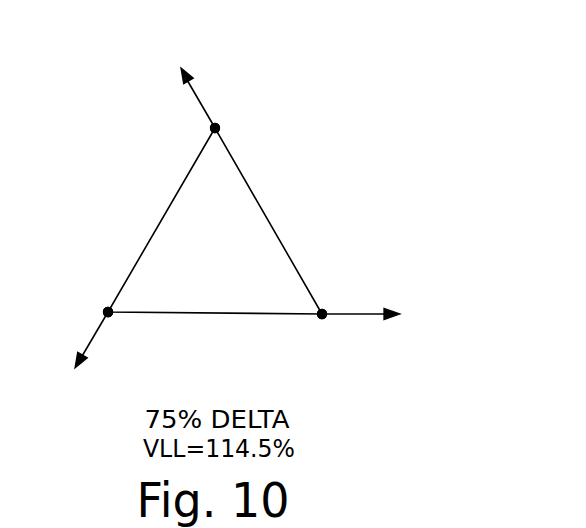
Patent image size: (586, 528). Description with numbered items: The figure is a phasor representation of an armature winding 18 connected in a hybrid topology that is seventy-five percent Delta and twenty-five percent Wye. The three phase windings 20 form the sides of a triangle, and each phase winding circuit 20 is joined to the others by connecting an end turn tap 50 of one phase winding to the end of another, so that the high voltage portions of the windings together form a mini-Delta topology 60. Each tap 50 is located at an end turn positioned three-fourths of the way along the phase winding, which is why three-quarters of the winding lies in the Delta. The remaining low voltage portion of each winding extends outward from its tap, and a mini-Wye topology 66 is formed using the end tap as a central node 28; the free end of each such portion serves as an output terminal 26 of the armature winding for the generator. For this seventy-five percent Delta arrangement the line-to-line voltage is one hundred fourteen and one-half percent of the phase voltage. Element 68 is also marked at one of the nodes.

The armature winding 18 is at (275, 103).
The phase winding circuit 20 is at (148, 240).
The output terminal 26 is at (177, 63).
The central node 28 is at (218, 128).
The end turn tap 50 is at (216, 125).
The mini-Delta topology 60 is at (232, 230).
The mini-Wye topology 66 is at (187, 130).
The terminal 68 is at (108, 310).